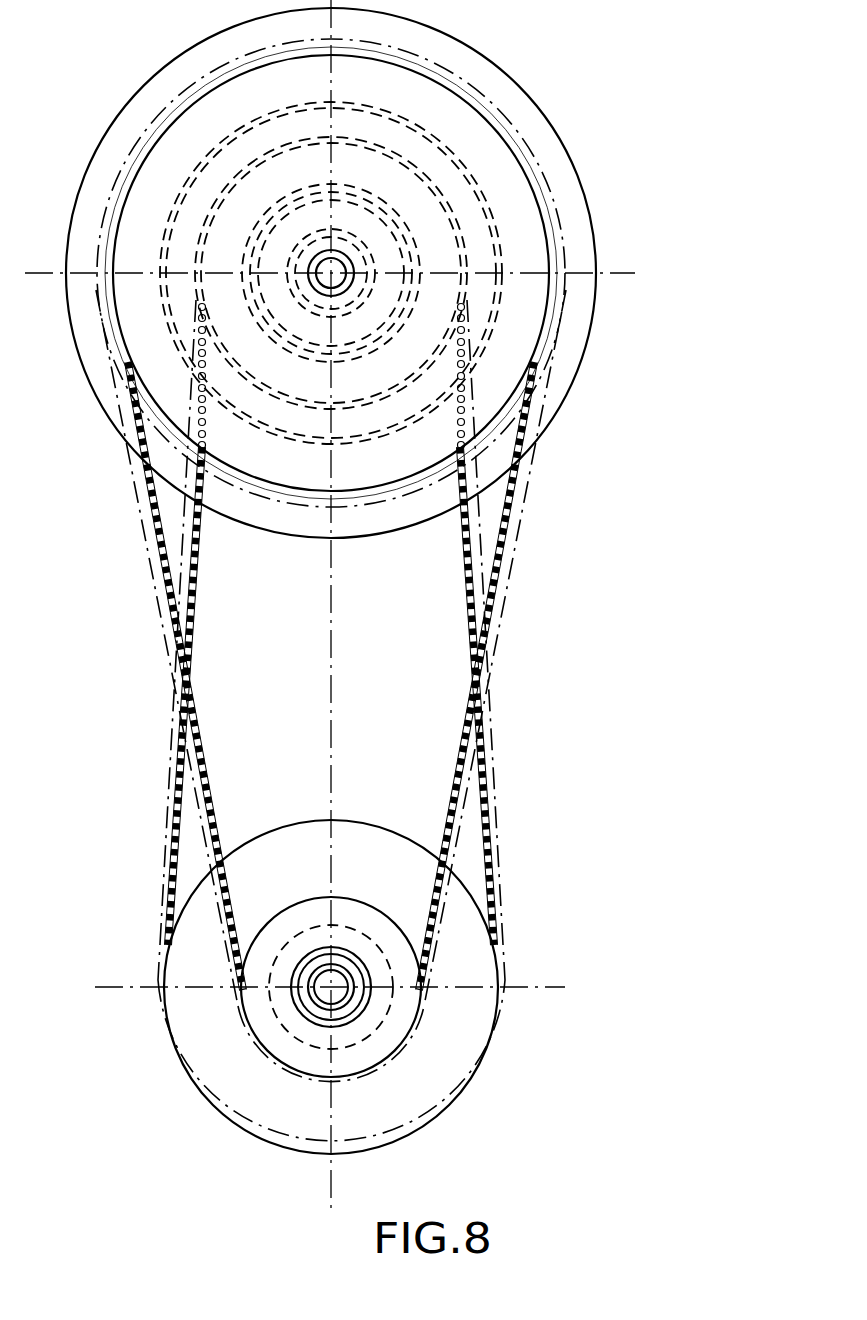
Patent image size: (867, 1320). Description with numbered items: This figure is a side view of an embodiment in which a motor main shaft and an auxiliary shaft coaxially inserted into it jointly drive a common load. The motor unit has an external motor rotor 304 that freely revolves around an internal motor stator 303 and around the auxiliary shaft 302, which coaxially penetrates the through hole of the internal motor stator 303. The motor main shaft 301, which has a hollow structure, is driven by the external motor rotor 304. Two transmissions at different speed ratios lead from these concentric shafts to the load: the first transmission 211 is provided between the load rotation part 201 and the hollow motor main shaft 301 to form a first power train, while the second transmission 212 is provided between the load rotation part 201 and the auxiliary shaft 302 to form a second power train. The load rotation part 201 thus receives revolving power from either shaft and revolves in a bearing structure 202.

The external motor rotor 304 is at (485, 95).
The internal motor stator 303 is at (472, 190).
The motor main shaft 301 is at (402, 238).
The auxiliary shaft 302 is at (337, 277).
The second transmission 212 is at (513, 543).
The first transmission 211 is at (490, 725).
The load rotation part 201 is at (350, 957).
The bearing structure 202 is at (340, 995).